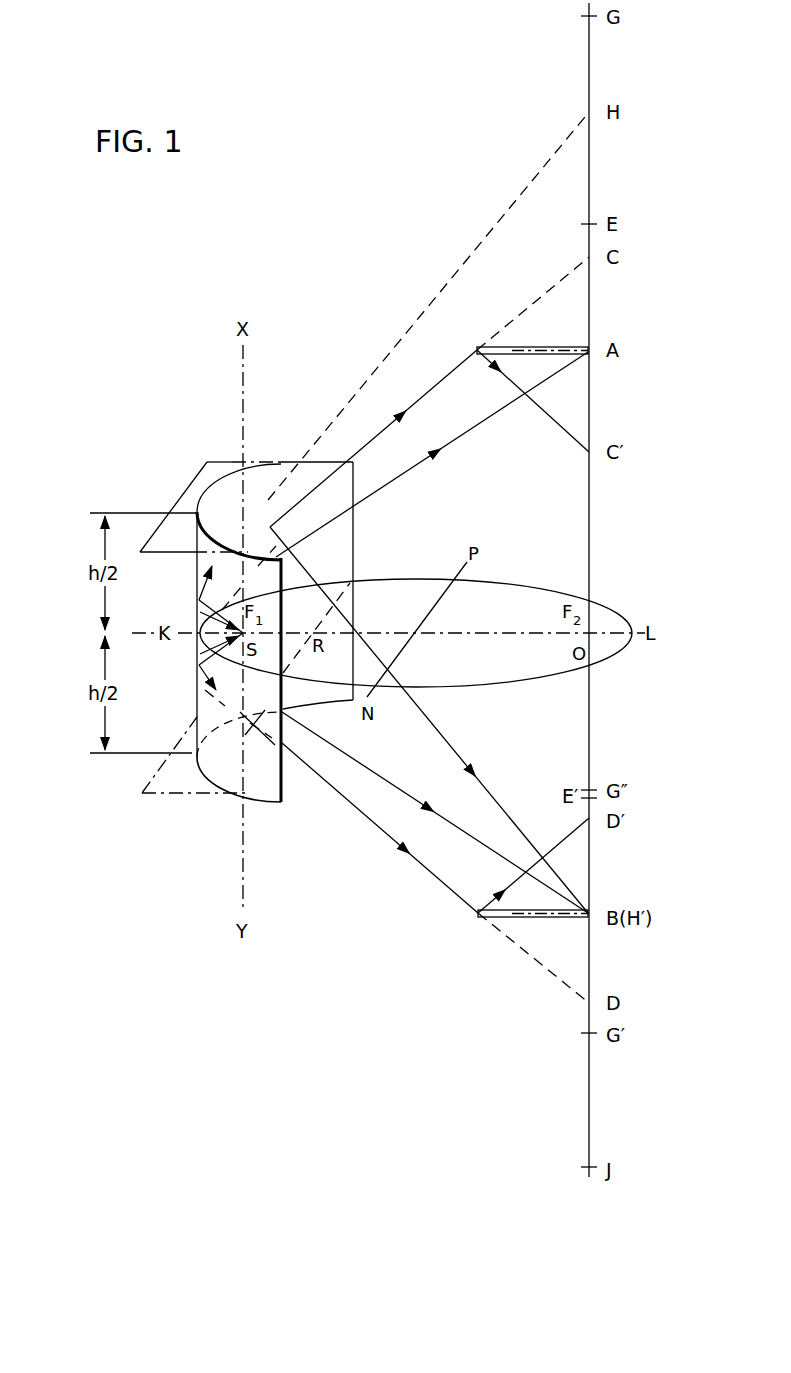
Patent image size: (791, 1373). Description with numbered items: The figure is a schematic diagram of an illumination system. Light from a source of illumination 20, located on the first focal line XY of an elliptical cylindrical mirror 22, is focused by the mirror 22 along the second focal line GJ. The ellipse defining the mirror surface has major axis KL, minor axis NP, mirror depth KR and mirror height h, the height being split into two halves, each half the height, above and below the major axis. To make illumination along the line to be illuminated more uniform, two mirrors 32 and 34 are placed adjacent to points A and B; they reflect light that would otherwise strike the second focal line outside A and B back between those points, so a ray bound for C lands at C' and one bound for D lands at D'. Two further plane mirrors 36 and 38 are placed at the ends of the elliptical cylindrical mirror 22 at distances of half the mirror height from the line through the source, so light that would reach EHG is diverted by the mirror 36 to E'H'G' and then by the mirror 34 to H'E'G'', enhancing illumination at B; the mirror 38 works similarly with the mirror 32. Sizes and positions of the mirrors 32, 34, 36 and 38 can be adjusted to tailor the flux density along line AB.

The source of illumination 20 is at (230, 640).
The elliptical cylindrical mirror 22 is at (345, 703).
The mirror 32 is at (548, 347).
The mirror 34 is at (552, 918).
The plane mirror 36 is at (206, 462).
The plane mirror 38 is at (168, 795).